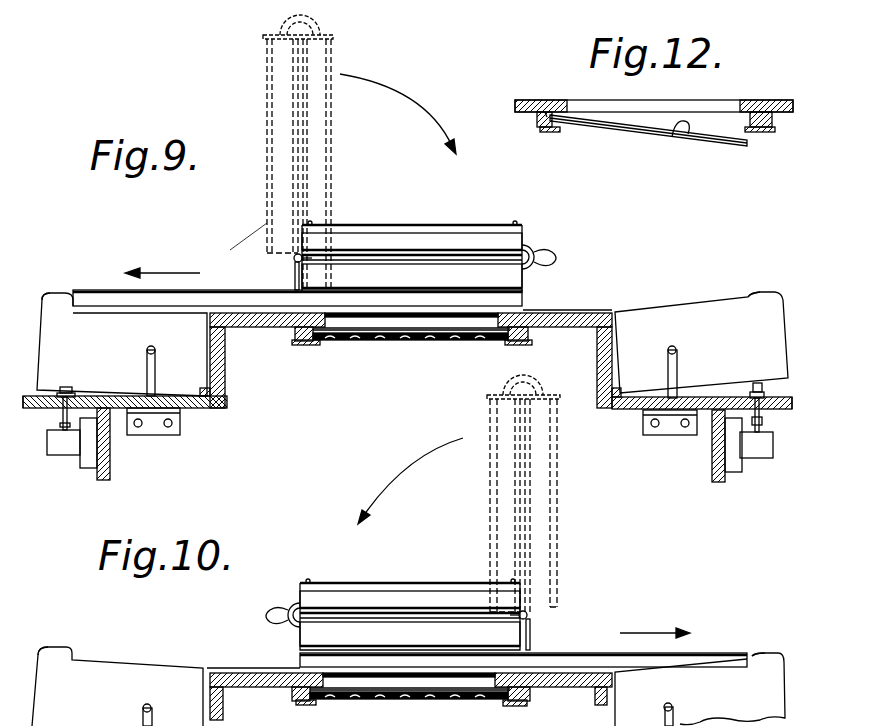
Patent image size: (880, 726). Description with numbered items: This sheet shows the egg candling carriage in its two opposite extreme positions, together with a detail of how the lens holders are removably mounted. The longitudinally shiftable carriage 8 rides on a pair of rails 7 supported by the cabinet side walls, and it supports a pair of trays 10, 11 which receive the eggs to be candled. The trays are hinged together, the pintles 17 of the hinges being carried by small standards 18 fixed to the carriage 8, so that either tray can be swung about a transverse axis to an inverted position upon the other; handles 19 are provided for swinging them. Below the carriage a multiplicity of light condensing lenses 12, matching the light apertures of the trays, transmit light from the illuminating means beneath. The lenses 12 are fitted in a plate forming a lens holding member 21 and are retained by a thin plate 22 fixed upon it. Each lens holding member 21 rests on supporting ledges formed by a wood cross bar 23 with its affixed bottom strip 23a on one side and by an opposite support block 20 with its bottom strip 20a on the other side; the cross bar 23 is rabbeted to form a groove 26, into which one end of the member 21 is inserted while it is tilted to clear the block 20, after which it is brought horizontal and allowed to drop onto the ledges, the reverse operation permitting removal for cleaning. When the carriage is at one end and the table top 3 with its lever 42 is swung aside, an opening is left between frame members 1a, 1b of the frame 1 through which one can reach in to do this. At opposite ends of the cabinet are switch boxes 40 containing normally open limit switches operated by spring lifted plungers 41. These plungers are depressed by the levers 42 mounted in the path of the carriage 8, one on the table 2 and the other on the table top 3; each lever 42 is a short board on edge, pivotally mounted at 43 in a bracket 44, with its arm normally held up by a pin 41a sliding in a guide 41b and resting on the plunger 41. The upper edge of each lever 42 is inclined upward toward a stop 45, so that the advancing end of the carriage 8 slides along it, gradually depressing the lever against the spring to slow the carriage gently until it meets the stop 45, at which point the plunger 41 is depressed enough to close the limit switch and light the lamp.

In FIG. 9, the frame 1 is at (407, 402).
In FIG. 9, the frame member 1a is at (227, 397).
In FIG. 9, the frame member 1b is at (110, 475).
In FIG. 9, the table 2 is at (32, 396).
In FIG. 9, the table top 3 is at (786, 399).
In FIG. 9, the rails 7 is at (590, 310).
In FIG. 10, the rails 7 is at (250, 672).
In FIG. 9, the carriage 8 is at (100, 290).
In FIG. 10, the carriage 8 is at (718, 655).
In FIG. 9, the tray 10 is at (268, 66).
In FIG. 10, the tray 10 is at (497, 511).
In FIG. 9, the tray 11 is at (318, 55).
In FIG. 10, the tray 11 is at (545, 514).
In FIG. 9, the light condensing lenses 12 is at (340, 340).
In FIG. 10, the light condensing lenses 12 is at (450, 698).
In FIG. 9, the pintles 17 is at (294, 259).
In FIG. 10, the pintles 17 is at (527, 616).
In FIG. 9, the standards 18 is at (295, 280).
In FIG. 10, the standards 18 is at (530, 640).
In FIG. 9, the handles 19 is at (292, 30).
In FIG. 10, the handles 19 is at (525, 378).
In FIG. 9, the support block 20 is at (530, 333).
In FIG. 12, the support block 20 is at (772, 118).
In FIG. 10, the support block 20 is at (532, 692).
In FIG. 9, the support pad 20a is at (521, 345).
In FIG. 12, the support pad 20a is at (762, 132).
In FIG. 10, the support pad 20a is at (525, 705).
In FIG. 12, the lens holding members 21 is at (632, 131).
In FIG. 12, the thin plate 22 is at (683, 135).
In FIG. 9, the cross bar 23 is at (295, 332).
In FIG. 12, the cross bar 23 is at (537, 118).
In FIG. 10, the cross bar 23 is at (295, 697).
In FIG. 9, the bottom strip 23a is at (305, 345).
In FIG. 12, the bottom strip 23a is at (549, 132).
In FIG. 10, the bottom strip 23a is at (305, 705).
In FIG. 12, the groove 26 is at (545, 112).
In FIG. 9, the switch boxes 40 is at (65, 455).
In FIG. 9, the plungers 41 is at (62, 425).
In FIG. 9, the pins 41a is at (74, 394).
In FIG. 9, the guides 41b is at (60, 388).
In FIG. 9, the lever 42 is at (412, 344).
In FIG. 10, the lever 42 is at (408, 686).
In FIG. 9, the pivot 43 is at (153, 350).
In FIG. 10, the pivot 43 is at (150, 707).
In FIG. 9, the brackets 44 is at (156, 366).
In FIG. 9, the stops 45 is at (73, 296).
In FIG. 10, the stops 45 is at (72, 655).